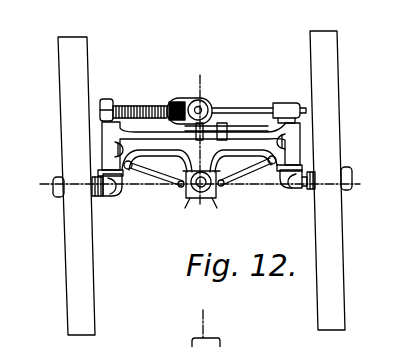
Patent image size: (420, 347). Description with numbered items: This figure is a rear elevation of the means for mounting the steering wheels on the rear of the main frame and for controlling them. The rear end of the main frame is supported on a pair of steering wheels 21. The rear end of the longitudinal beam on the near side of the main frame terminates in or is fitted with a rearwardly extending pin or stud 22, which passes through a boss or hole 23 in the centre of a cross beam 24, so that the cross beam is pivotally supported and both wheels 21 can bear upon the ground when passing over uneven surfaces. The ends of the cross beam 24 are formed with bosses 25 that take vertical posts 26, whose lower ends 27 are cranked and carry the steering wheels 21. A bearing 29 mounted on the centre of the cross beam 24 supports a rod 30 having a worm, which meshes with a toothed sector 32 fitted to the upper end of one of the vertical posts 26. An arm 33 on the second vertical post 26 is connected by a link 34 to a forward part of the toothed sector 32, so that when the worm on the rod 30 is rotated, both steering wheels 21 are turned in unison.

The steering wheels 21 is at (72, 305).
The rearwardly extending pin or stud 22 is at (213, 195).
The boss or hole 23 is at (185, 195).
The cross beam 24 is at (242, 128).
The bosses 25 is at (110, 145).
The vertical posts 26 is at (113, 182).
The cranked lower ends 27 is at (110, 195).
The bearing 29 is at (210, 95).
The rod 30 is at (186, 100).
The toothed sector 32 is at (140, 107).
The arm 33 is at (291, 102).
The link 34 is at (235, 108).